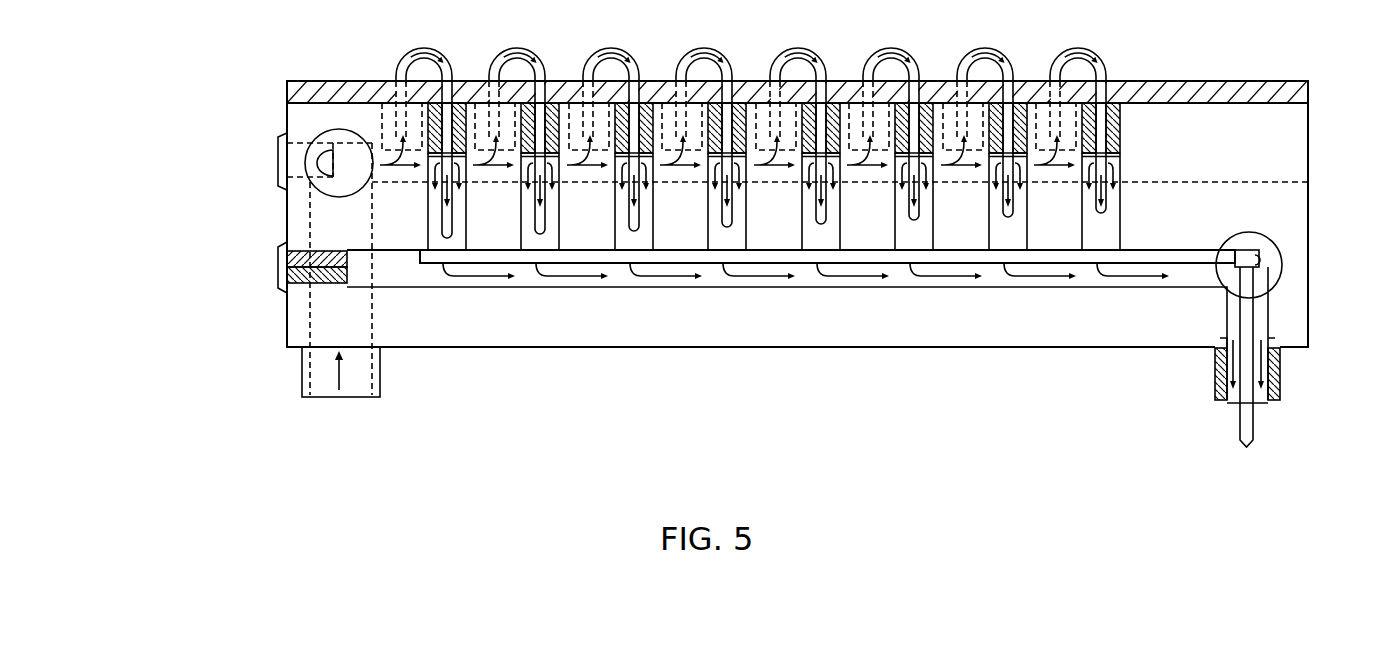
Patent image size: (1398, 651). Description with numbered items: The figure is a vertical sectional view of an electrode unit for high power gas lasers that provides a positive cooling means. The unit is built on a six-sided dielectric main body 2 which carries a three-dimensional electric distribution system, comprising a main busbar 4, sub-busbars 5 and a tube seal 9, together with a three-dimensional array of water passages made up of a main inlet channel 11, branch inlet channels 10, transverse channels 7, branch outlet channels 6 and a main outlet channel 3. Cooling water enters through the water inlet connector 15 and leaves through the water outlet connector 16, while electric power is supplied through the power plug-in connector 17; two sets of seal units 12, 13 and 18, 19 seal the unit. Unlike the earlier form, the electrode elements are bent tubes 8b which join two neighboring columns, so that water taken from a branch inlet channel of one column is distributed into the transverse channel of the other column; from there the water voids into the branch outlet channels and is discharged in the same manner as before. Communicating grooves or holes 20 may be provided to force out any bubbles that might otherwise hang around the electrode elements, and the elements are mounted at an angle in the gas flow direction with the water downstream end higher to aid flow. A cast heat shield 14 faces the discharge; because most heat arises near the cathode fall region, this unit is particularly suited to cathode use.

The dielectric main body 2 is at (1312, 187).
The main outlet channel 3 is at (1278, 243).
The main busbar 4 is at (1253, 262).
The sub-busbars 5 is at (1022, 265).
The branch outlet channels 6 is at (958, 289).
The transverse channels 7 is at (1114, 228).
The bent tubes 8b is at (400, 57).
The tube seal 9 is at (1118, 127).
The branch inlet channels 10 is at (1072, 165).
The main inlet channel 11 is at (335, 143).
The seal unit 12 is at (284, 262).
The seal unit 13 is at (284, 283).
The heat shield 14 is at (1313, 83).
The water inlet connector 15 is at (382, 386).
The water outlet connector 16 is at (1282, 383).
The power plug-in connector 17 is at (1247, 430).
The seal unit 18 is at (280, 163).
The seal unit 19 is at (280, 144).
The communicating grooves or holes 20 is at (821, 203).